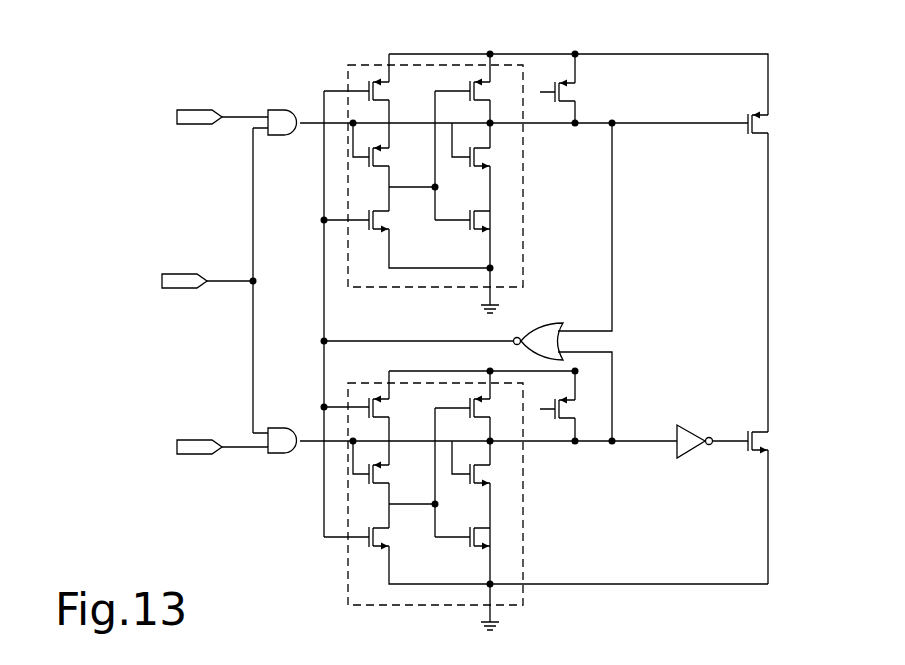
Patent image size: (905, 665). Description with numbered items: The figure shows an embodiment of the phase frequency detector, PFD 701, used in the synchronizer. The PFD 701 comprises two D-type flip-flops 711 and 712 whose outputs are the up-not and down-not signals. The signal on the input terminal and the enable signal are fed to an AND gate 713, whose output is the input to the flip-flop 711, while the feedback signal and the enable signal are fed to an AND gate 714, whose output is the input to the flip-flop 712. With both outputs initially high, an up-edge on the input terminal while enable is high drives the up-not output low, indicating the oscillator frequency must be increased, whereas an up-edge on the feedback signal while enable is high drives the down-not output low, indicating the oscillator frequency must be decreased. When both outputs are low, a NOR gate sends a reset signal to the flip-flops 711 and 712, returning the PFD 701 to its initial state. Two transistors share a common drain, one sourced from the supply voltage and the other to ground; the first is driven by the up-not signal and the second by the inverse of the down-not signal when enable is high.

The PFD 701 is at (194, 60).
The flip-flop 711 is at (357, 64).
The flip-flop 712 is at (347, 572).
The AND gate 713 is at (285, 109).
The AND gate 714 is at (278, 452).